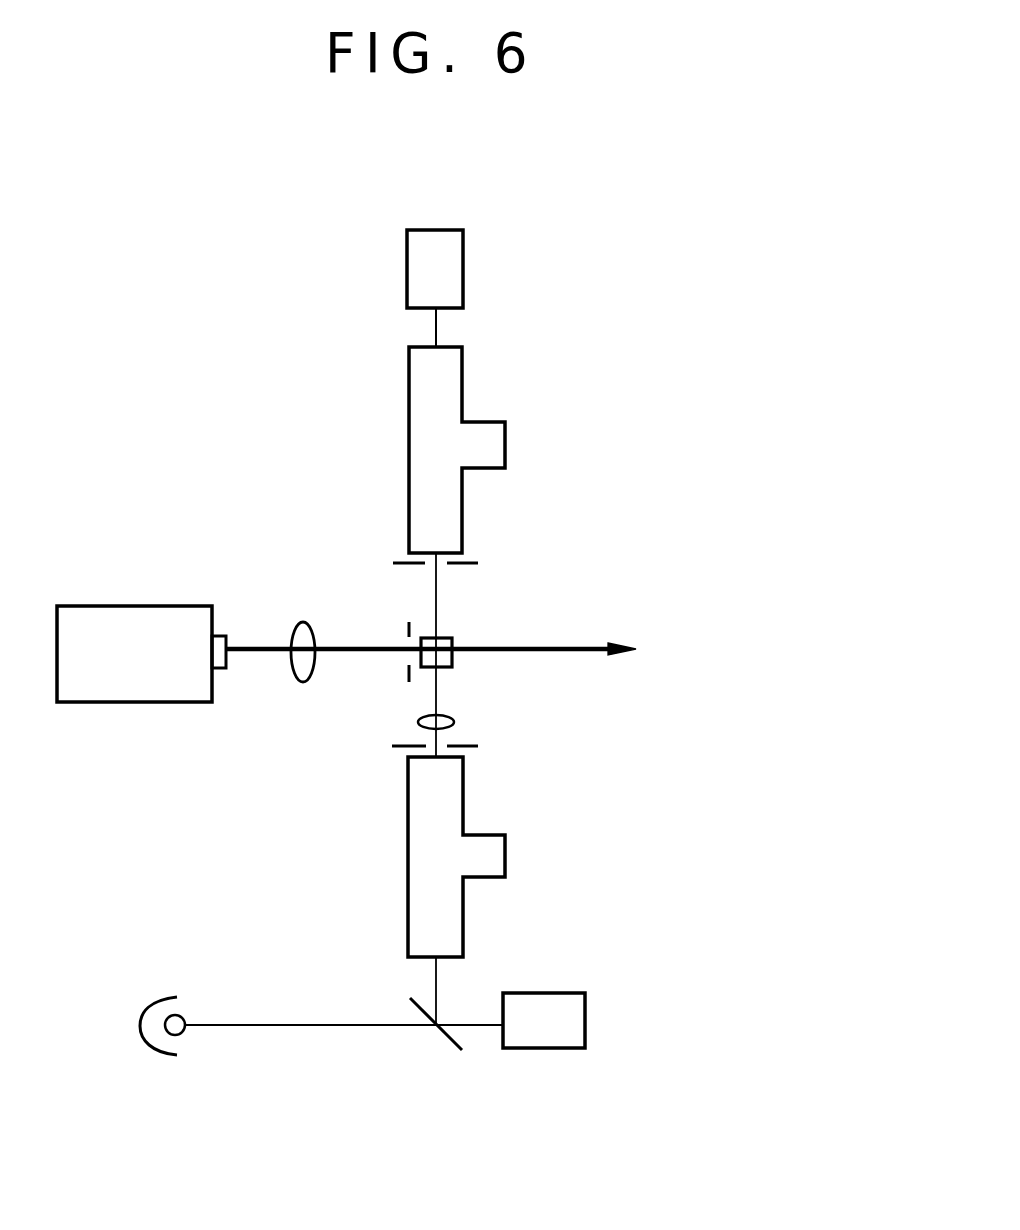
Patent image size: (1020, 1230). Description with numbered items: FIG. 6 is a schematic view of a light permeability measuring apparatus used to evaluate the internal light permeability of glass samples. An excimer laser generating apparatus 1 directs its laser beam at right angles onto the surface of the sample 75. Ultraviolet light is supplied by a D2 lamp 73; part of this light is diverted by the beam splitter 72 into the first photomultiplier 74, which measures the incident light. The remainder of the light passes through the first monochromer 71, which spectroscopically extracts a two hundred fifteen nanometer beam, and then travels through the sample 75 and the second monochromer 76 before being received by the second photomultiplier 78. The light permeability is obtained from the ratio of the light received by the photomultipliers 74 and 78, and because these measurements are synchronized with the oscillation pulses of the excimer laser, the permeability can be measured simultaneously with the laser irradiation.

The excimer laser generating apparatus 1 is at (160, 606).
The first monochromer 71 is at (462, 818).
The beam splitter 72 is at (455, 1052).
The D2 lamp 73 is at (175, 1056).
The first photomultiplier 74 is at (560, 993).
The sample 75 is at (450, 636).
The second monochromer 76 is at (462, 420).
The second photomultiplier 78 is at (463, 266).